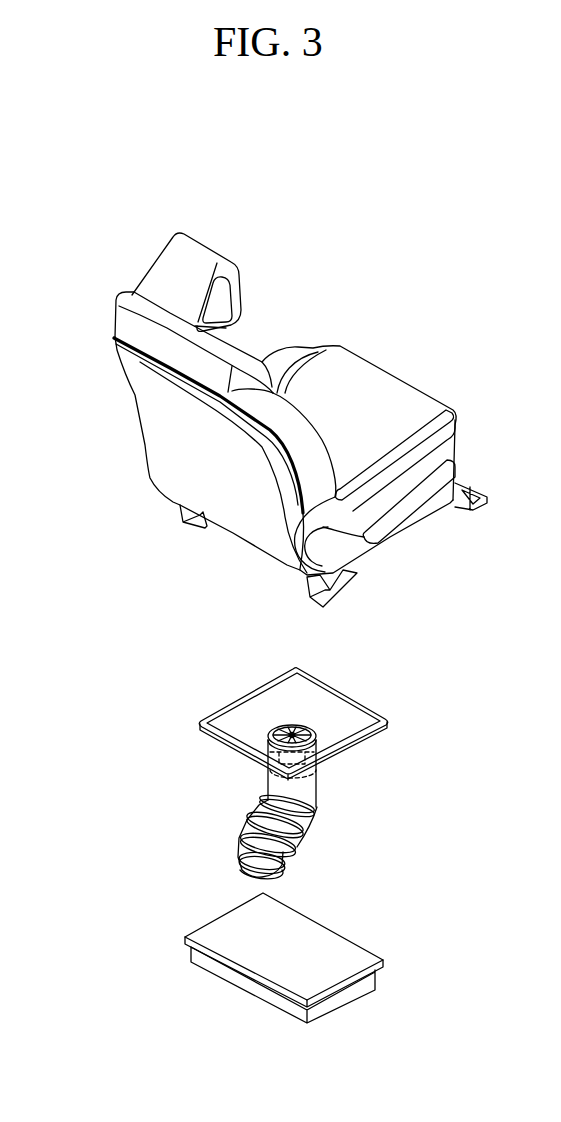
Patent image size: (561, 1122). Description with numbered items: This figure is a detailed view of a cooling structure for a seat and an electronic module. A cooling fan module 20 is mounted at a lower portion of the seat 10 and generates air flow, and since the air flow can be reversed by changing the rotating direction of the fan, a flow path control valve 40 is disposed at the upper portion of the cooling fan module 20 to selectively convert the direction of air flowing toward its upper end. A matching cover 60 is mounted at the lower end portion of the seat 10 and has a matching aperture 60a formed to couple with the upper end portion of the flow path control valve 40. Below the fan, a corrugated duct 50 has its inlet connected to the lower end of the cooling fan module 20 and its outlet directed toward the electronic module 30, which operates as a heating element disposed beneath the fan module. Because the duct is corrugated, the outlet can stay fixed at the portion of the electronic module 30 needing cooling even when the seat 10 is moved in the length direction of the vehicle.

The seat 10 is at (171, 507).
The cooling fan module 20 is at (307, 768).
The electronic module 30 is at (223, 923).
The flow path control valve 40 is at (317, 747).
The corrugated duct 50 is at (258, 815).
The matching cover 60 is at (343, 718).
The matching aperture 60a is at (280, 727).